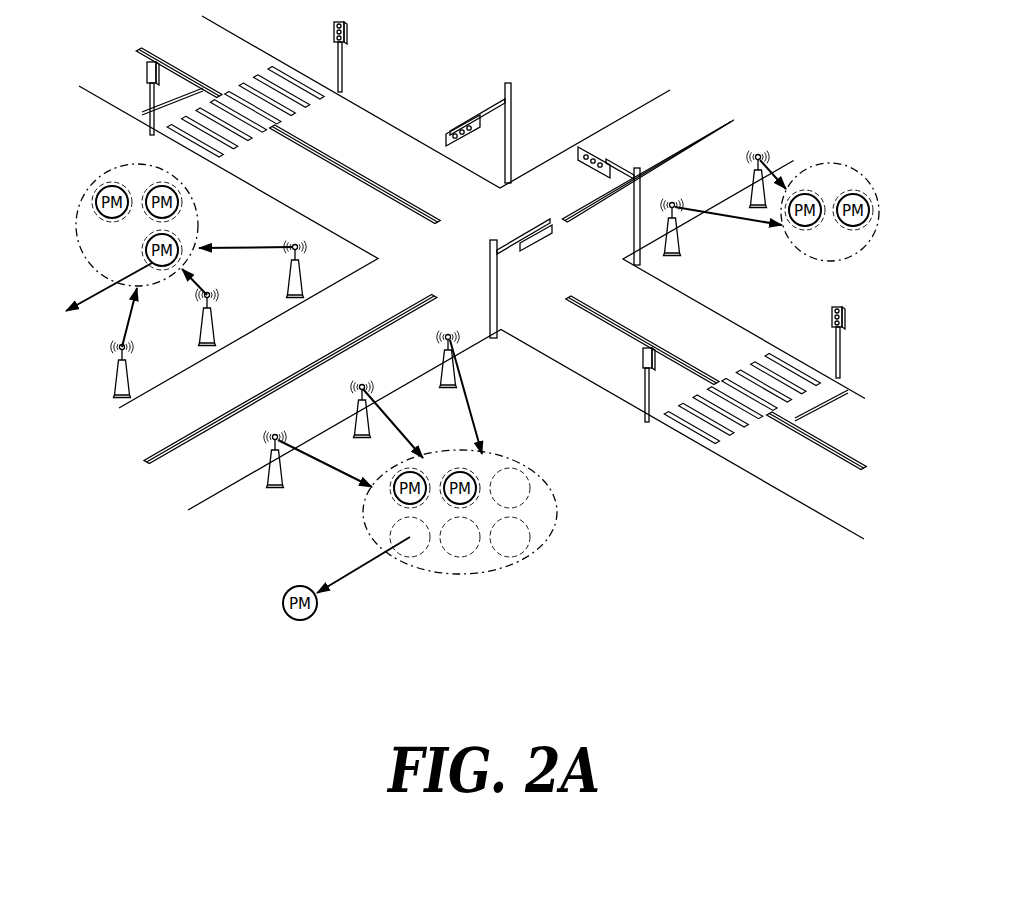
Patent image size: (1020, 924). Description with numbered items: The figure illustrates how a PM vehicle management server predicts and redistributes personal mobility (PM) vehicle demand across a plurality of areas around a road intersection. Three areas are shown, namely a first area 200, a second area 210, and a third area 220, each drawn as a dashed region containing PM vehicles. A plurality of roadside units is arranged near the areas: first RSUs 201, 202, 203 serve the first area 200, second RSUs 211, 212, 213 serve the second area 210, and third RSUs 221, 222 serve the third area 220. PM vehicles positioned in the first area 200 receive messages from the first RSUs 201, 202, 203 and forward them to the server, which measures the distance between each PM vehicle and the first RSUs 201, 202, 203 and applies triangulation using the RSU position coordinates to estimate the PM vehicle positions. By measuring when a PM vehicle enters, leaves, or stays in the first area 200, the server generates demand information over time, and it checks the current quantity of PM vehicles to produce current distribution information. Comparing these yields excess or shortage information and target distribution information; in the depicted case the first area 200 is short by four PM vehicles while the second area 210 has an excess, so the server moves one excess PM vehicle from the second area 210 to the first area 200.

The first area 200 is at (557, 512).
The first RSU 201 is at (283, 487).
The first RSU 202 is at (355, 425).
The first RSU 203 is at (440, 375).
The second area 210 is at (108, 165).
The second RSU 211 is at (127, 375).
The second RSU 212 is at (203, 333).
The second RSU 213 is at (290, 290).
The third area 220 is at (831, 162).
The third RSU 221 is at (681, 245).
The third RSU 222 is at (752, 190).